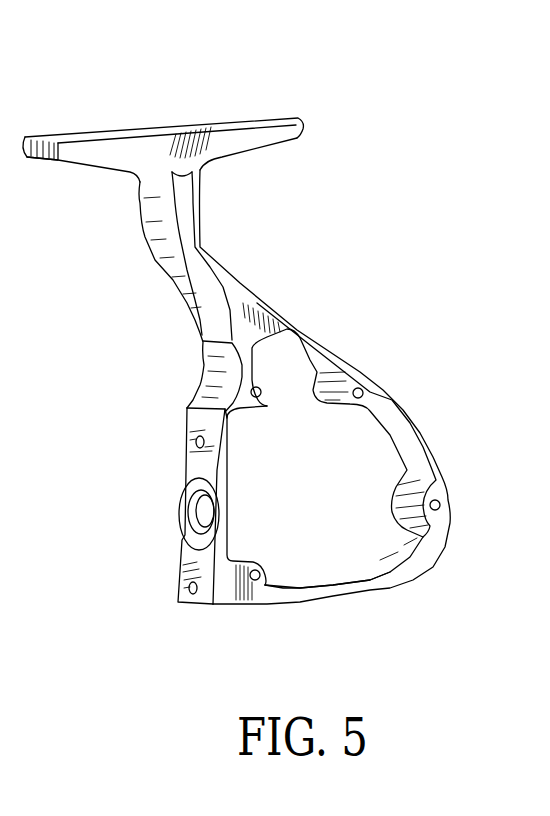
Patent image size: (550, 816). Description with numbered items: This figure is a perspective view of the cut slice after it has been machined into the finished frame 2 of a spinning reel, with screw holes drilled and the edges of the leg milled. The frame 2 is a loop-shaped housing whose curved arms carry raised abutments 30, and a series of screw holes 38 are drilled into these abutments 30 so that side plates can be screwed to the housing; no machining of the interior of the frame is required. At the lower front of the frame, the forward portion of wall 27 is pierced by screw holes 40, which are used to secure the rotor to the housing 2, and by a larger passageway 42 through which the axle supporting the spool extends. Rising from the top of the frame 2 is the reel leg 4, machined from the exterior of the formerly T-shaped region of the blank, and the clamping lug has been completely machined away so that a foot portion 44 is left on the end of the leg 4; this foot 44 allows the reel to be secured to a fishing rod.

The frame 2 is at (403, 383).
The reel leg 4 is at (163, 223).
The wall 27 is at (349, 580).
The raised abutments 30 is at (345, 421).
The mounting holes 38 is at (266, 388).
The screw holes 40 is at (196, 440).
The passageway 42 is at (194, 512).
The foot portion 44 is at (237, 137).